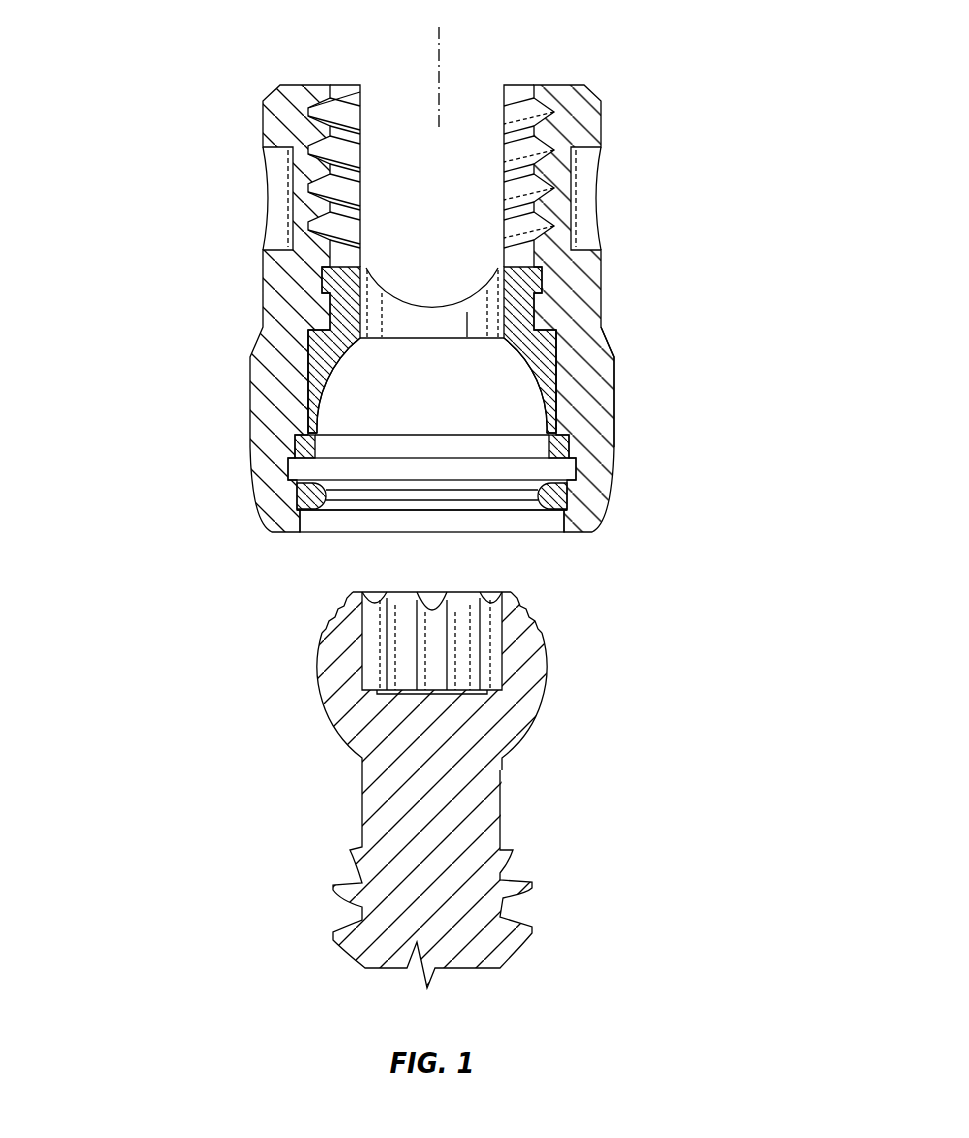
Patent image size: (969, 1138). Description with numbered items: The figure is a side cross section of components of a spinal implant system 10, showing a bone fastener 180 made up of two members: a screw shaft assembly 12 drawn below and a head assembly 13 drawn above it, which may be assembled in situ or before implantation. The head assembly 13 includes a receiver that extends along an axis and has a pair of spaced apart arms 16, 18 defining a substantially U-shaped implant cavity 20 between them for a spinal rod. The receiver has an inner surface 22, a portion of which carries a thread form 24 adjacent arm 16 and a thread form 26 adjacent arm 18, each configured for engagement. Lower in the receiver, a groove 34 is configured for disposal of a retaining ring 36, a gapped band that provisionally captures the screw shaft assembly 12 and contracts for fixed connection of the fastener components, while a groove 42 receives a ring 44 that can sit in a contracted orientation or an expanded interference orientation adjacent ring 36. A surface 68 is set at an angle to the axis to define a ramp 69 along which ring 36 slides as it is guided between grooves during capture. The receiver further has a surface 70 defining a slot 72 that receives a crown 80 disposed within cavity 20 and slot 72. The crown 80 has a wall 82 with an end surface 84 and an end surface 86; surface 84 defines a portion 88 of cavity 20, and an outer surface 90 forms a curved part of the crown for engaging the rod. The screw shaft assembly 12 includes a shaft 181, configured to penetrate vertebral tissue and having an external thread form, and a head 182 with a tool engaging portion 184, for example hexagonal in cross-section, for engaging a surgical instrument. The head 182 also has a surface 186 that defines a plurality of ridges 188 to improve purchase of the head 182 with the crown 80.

The spinal implant system 10 is at (60, 93).
The screw shaft assembly 12 is at (645, 806).
The head assembly 13 is at (748, 253).
The arm 16 is at (262, 112).
The arm 18 is at (599, 120).
The implant cavity 20 is at (478, 106).
The inner surface 22 is at (545, 228).
The thread form 24 is at (340, 95).
The thread form 26 is at (545, 158).
The groove 34 is at (297, 485).
The retaining ring 36 is at (297, 512).
The groove 42 is at (289, 459).
The ring 44 is at (302, 445).
The surface 68 is at (298, 487).
The ramp 69 is at (299, 493).
The surface 70 is at (558, 357).
The slot 72 is at (557, 330).
The crown 80 is at (558, 373).
The wall 82 is at (312, 346).
The end surface 84 is at (336, 244).
The end surface 86 is at (300, 436).
The portion of cavity 88 is at (408, 297).
The outer surface 90 is at (441, 298).
The bone fastener 180 is at (143, 303).
The shaft 181 is at (478, 920).
The head 182 is at (523, 678).
The tool engaging portion 184 is at (485, 637).
The surface 186 is at (510, 596).
The ridges 188 is at (533, 622).